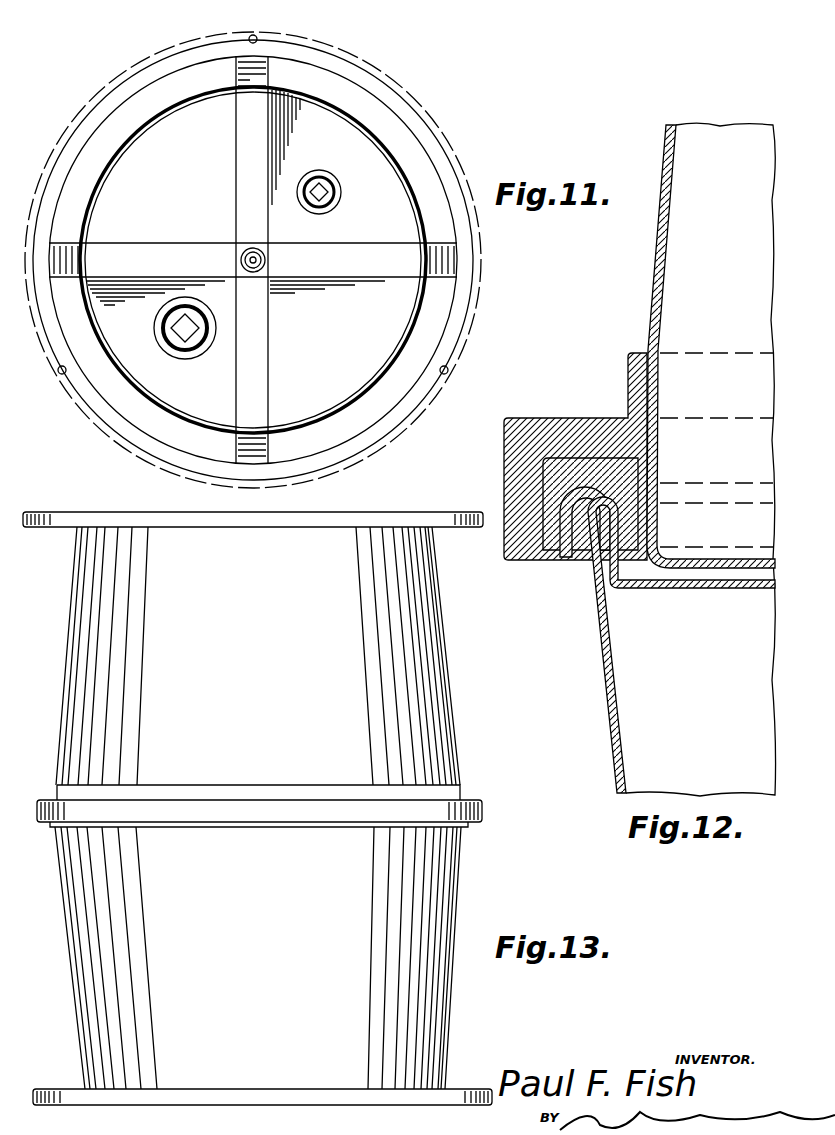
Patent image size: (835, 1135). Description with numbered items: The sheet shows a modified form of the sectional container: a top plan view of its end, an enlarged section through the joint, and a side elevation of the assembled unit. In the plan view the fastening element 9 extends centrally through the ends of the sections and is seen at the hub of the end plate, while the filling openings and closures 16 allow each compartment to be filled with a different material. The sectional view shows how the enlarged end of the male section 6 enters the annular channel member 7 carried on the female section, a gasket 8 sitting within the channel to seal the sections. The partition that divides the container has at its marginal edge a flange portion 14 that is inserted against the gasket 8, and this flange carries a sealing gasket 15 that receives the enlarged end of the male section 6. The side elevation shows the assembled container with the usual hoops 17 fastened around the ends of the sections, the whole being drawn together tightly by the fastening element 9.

In FIG. 11, the hoops 17 is at (457, 158).
In FIG. 13, the hoops 17 is at (386, 512).
In FIG. 11, the fastening element 9 is at (240, 261).
In FIG. 11, the filling openings and closures 16 is at (171, 328).
In FIG. 13, the annular channel member 7 is at (483, 810).
In FIG. 12, the annular channel member 7 is at (504, 455).
In FIG. 12, the gasket 8 is at (565, 462).
In FIG. 12, the sealing gasket 15 is at (514, 541).
In FIG. 12, the flange portion 14 is at (570, 538).
In FIG. 12, the male section 6 is at (647, 459).